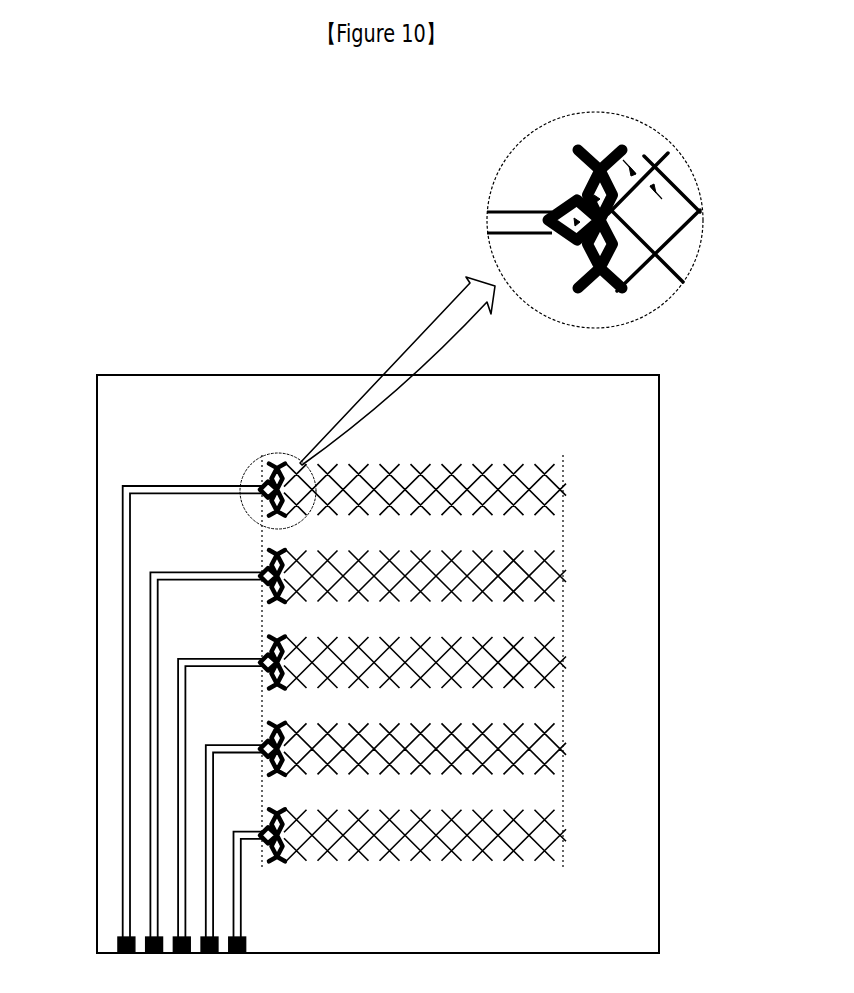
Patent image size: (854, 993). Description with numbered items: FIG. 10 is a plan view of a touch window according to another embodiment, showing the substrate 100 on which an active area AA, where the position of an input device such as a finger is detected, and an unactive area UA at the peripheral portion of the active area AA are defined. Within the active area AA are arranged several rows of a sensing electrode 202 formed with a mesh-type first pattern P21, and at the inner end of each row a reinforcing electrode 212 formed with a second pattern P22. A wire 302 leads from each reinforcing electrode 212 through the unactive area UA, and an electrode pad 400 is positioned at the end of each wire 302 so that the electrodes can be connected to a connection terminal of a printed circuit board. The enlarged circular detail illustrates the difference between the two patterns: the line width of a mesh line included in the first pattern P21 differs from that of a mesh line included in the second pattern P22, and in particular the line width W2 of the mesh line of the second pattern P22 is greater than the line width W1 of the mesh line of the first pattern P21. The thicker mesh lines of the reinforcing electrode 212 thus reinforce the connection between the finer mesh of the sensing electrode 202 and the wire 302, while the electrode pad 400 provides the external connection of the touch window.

The substrate 100 is at (238, 433).
The unactive area UA is at (640, 418).
The active area AA is at (548, 530).
The reinforcing electrode 212 is at (278, 462).
The sensing electrode 202 is at (348, 467).
The wire 302 is at (127, 538).
The electrode pad 400 is at (118, 945).
The first pattern P21 is at (657, 262).
The second pattern P22 is at (581, 265).
The line width of first pattern mesh line W1 is at (636, 170).
The line width of second pattern mesh line W2 is at (562, 200).